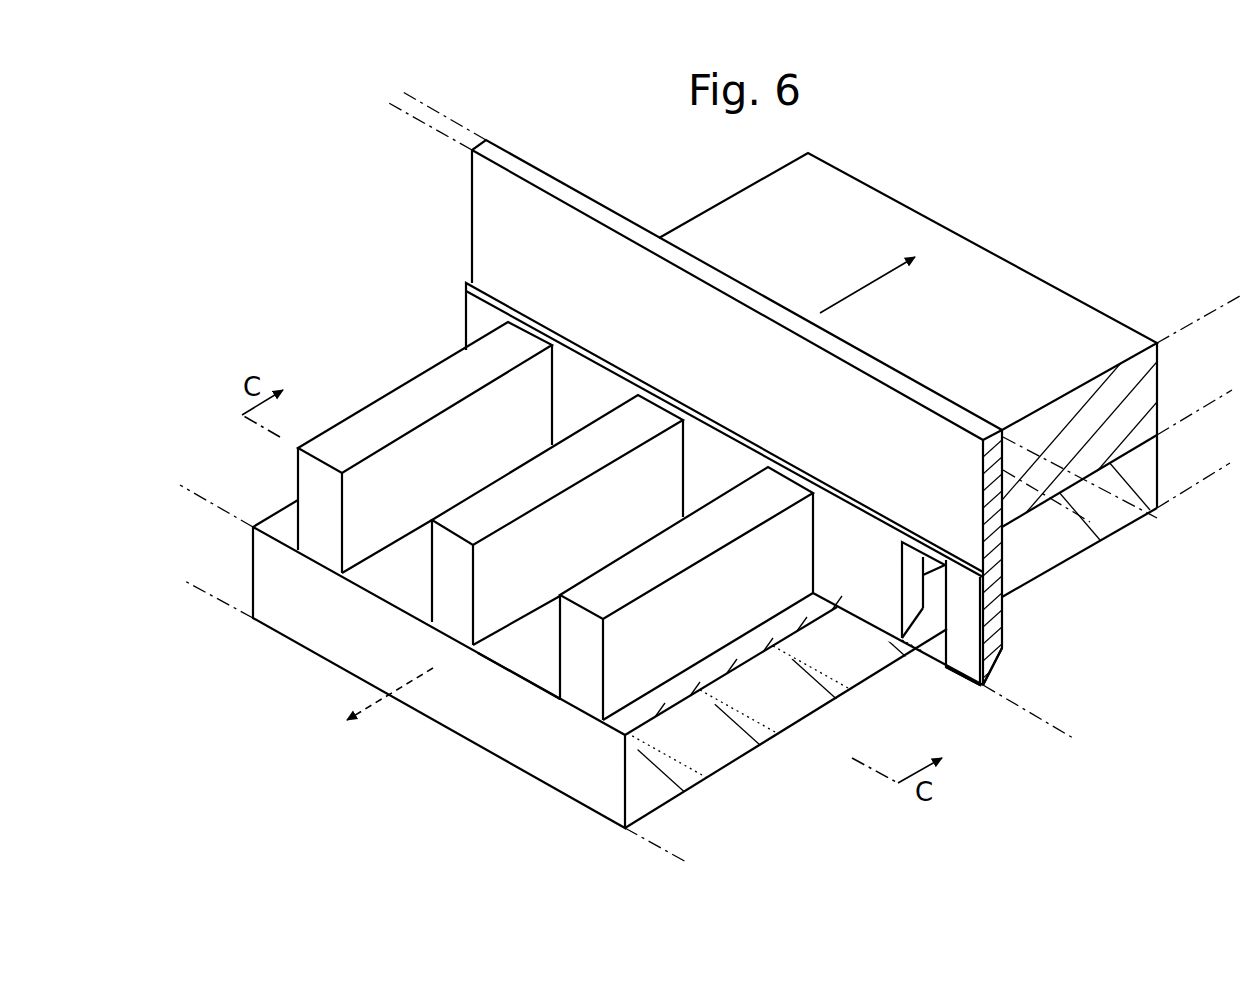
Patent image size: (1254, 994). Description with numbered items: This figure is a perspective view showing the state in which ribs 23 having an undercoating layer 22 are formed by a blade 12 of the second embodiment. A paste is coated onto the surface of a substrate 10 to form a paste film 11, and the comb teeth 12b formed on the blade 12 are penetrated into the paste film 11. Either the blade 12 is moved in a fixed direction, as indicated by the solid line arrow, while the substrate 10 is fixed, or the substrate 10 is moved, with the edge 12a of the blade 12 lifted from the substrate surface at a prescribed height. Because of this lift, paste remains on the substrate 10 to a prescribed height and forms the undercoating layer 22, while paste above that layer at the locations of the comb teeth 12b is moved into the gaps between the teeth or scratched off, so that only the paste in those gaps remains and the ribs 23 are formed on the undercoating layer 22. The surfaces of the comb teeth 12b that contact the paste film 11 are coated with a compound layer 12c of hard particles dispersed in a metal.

The substrate 10 is at (743, 733).
The paste film 11 is at (1047, 325).
The blade 12 is at (585, 233).
The edge 12a is at (970, 688).
The comb teeth 12b is at (867, 612).
The compound layer 12c is at (993, 630).
The undercoating layer 22 is at (483, 663).
The ribs 23 is at (316, 535).